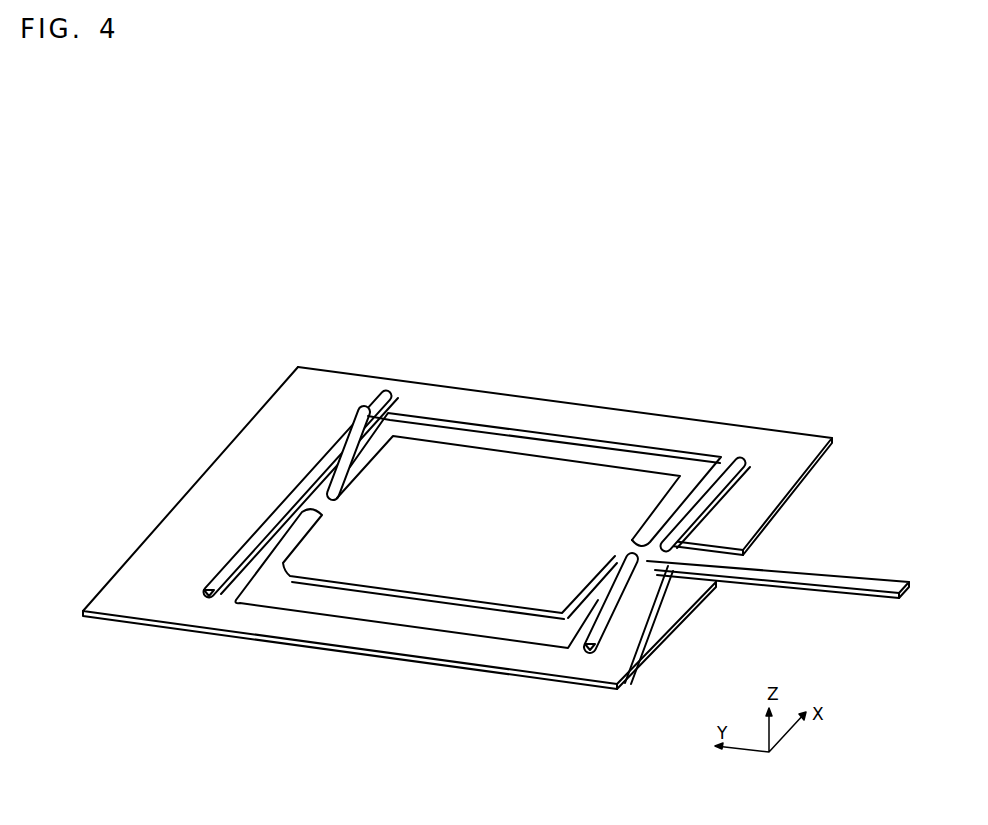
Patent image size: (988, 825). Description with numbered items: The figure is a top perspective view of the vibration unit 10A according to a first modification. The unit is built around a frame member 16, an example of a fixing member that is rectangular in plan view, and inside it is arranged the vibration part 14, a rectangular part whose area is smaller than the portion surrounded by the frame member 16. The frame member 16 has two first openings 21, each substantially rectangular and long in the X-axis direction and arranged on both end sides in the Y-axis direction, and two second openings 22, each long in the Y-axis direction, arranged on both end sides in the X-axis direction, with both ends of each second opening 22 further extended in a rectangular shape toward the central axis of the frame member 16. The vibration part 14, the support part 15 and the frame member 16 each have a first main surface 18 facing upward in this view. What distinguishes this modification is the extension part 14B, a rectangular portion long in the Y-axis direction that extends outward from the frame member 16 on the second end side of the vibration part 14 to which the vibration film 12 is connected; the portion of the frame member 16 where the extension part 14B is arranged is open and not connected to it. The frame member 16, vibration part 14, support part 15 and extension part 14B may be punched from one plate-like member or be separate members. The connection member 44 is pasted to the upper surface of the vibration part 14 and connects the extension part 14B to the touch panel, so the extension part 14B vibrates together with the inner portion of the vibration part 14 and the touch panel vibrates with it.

The vibration unit 10A is at (304, 294).
The vibration film 12 is at (338, 452).
The vibration part 14 is at (430, 437).
The extension part 14B is at (889, 582).
The support part 15 is at (292, 507).
The frame member 16 is at (786, 458).
The first main surface 18 is at (587, 463).
The first opening 21 is at (208, 596).
The second opening 22 is at (647, 460).
The connection member 44 is at (508, 527).